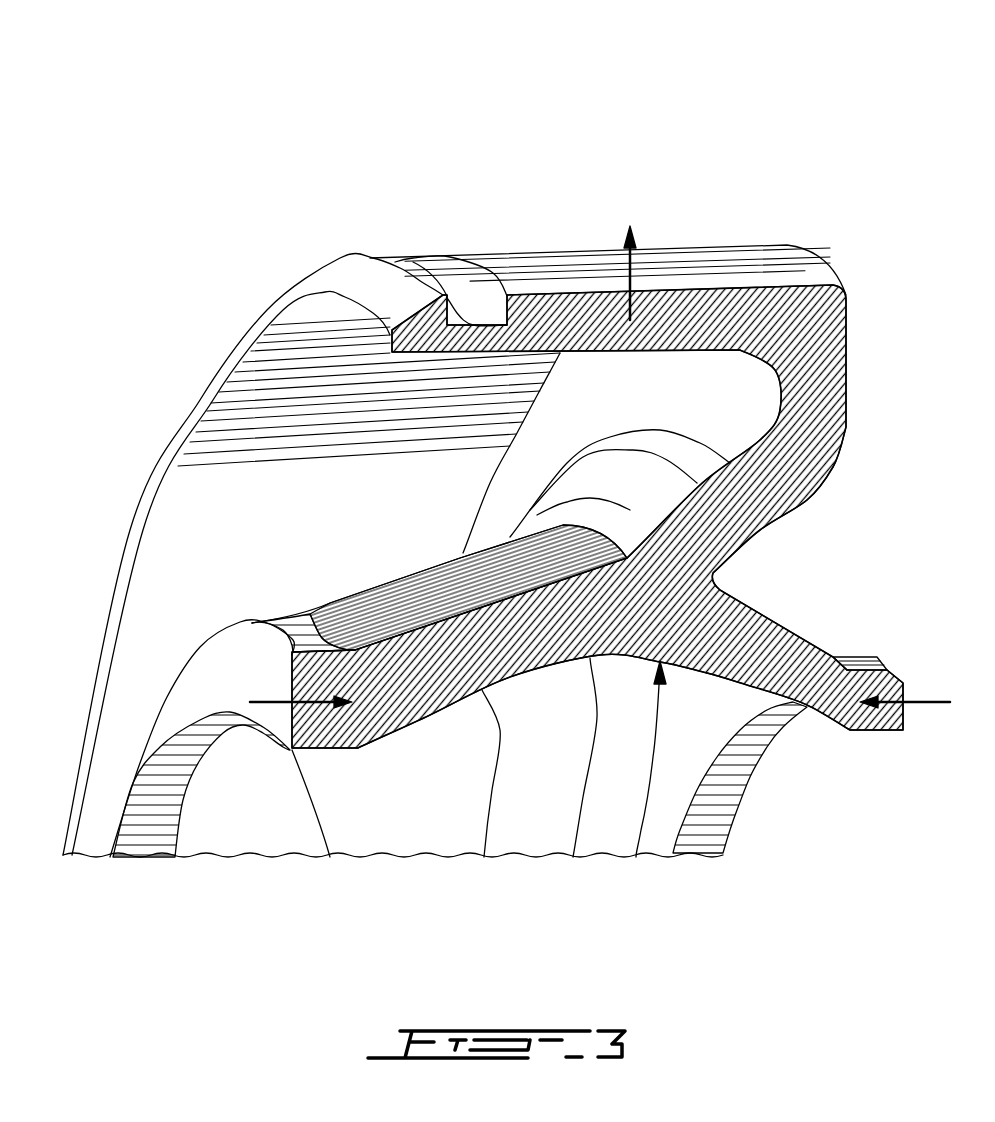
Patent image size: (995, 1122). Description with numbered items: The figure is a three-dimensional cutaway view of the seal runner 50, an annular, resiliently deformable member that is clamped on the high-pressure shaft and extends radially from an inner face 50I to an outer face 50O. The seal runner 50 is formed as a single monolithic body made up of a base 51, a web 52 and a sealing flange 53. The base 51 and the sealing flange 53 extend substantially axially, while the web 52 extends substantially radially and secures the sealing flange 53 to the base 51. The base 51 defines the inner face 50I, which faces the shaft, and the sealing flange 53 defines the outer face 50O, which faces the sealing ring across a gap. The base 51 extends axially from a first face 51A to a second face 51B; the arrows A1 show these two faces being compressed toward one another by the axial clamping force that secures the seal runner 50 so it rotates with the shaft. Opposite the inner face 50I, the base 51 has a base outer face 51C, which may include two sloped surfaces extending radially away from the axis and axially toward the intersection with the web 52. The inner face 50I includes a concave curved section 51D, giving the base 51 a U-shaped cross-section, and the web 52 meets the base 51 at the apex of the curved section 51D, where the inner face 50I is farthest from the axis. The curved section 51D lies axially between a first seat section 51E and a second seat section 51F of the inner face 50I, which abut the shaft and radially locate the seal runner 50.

The seal runner 50 is at (795, 153).
The sealing flange 53 is at (550, 323).
The outer face 50O is at (686, 262).
The base outer face 51C is at (428, 590).
The web 52 is at (800, 466).
The first face 51A is at (177, 695).
The arrows A1 is at (935, 700).
The second face 51B is at (905, 717).
The first seat section 51E is at (163, 793).
The base 51 is at (483, 840).
The curved section 51D is at (573, 840).
The inner face 50I is at (638, 840).
The second seat section 51F is at (722, 795).